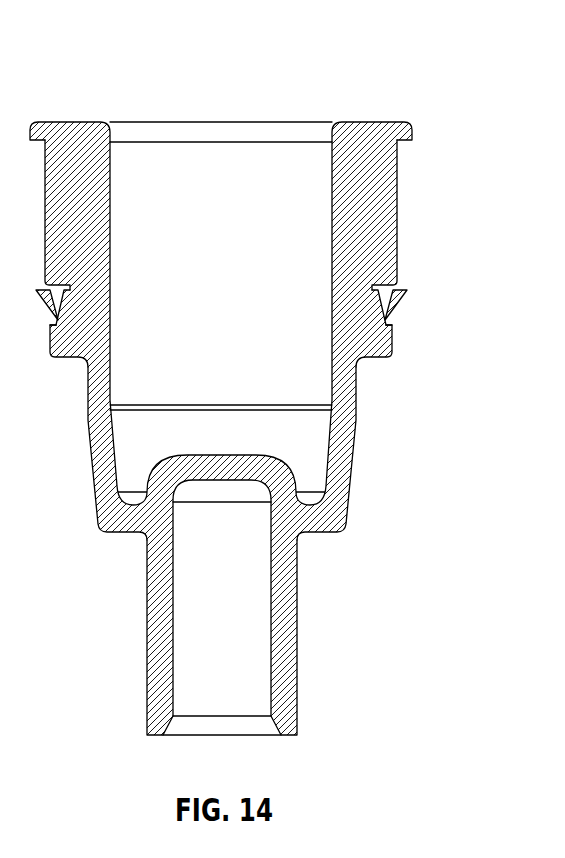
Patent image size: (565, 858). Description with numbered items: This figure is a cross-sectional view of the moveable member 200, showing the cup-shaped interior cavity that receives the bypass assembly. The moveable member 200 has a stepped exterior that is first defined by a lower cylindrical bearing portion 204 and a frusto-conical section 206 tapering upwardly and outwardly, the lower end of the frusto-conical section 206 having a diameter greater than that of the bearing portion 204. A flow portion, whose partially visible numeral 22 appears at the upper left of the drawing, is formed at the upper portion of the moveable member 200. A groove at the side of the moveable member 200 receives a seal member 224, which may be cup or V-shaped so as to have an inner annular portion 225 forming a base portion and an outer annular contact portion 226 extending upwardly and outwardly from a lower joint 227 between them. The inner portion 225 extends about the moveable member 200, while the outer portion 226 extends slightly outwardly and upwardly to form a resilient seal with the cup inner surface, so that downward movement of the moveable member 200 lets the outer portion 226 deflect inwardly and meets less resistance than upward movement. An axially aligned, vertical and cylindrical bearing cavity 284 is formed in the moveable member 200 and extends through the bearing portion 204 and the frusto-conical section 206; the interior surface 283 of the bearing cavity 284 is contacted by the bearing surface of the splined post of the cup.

The moveable member 200 is at (314, 48).
The lower cylindrical bearing portion 204 is at (122, 649).
The frusto-conical section 206 is at (370, 473).
The rim flange 22 is at (13, 163).
The seal member 224 is at (36, 305).
The inner annular portion 225 is at (368, 310).
The outer annular contact portion 226 is at (400, 293).
The lower joint 227 is at (385, 323).
The interior surface 283 is at (276, 609).
The bearing cavity 284 is at (252, 664).